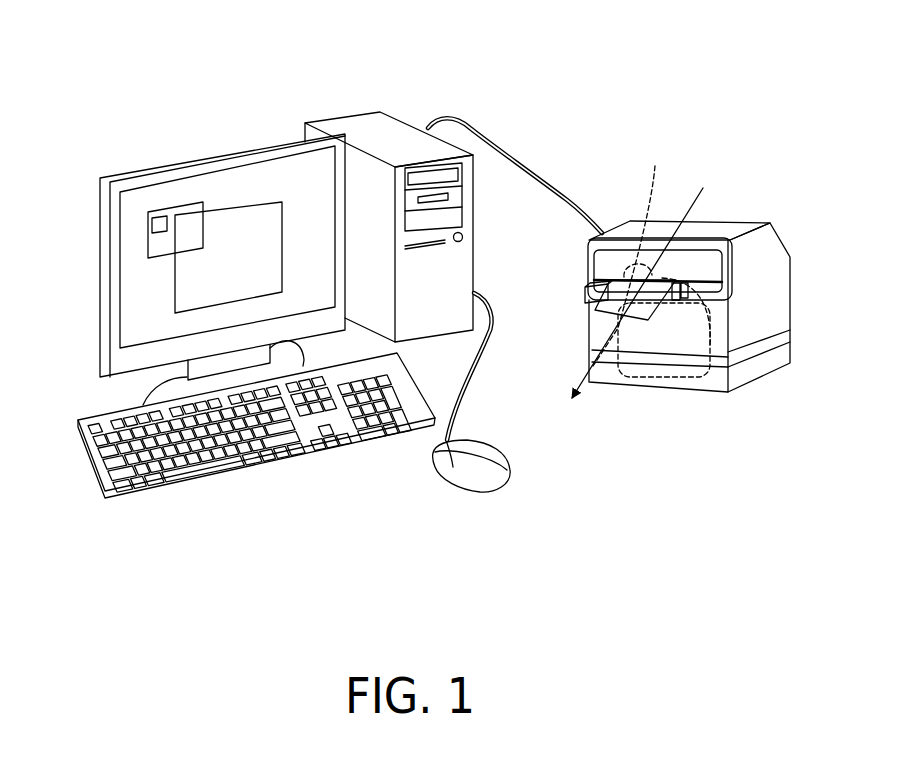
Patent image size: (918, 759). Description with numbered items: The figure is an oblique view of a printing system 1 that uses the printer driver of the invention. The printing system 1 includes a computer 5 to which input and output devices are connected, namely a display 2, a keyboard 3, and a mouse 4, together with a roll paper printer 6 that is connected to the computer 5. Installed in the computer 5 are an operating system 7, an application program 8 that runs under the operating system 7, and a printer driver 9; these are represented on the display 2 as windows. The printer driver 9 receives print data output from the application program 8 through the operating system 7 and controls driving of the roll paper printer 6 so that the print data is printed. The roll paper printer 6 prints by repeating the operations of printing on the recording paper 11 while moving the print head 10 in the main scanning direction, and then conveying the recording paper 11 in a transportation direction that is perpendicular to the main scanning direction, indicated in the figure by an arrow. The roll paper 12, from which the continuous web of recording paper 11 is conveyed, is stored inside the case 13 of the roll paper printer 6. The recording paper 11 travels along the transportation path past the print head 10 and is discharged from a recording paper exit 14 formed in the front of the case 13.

The printing system 1 is at (520, 90).
The display 2 is at (98, 236).
The keyboard 3 is at (193, 485).
The mouse 4 is at (452, 476).
The computer 5 is at (357, 112).
The roll paper printer 6 is at (721, 212).
The operating system 7 is at (140, 320).
The application program 8 is at (243, 205).
The printer driver 9 is at (182, 203).
The print head 10 is at (633, 250).
The recording paper 11 is at (600, 307).
The roll paper 12 is at (712, 340).
The case 13 is at (775, 270).
The recording paper exit 14 is at (603, 270).